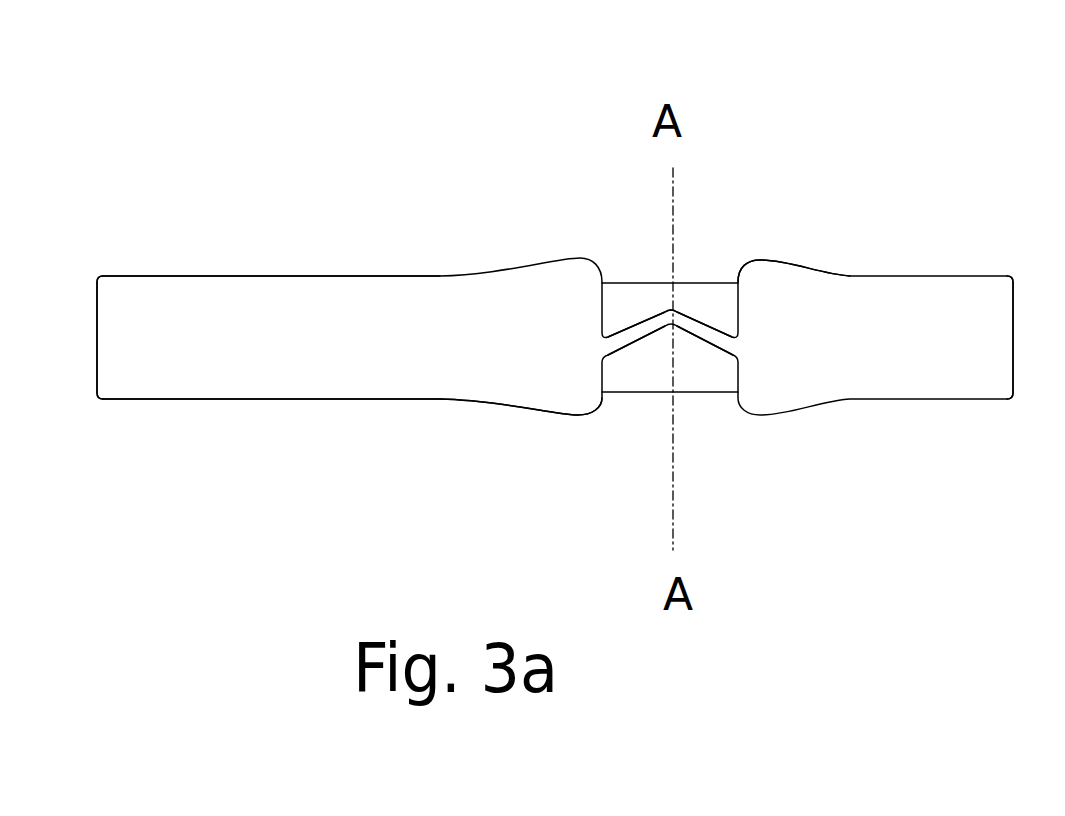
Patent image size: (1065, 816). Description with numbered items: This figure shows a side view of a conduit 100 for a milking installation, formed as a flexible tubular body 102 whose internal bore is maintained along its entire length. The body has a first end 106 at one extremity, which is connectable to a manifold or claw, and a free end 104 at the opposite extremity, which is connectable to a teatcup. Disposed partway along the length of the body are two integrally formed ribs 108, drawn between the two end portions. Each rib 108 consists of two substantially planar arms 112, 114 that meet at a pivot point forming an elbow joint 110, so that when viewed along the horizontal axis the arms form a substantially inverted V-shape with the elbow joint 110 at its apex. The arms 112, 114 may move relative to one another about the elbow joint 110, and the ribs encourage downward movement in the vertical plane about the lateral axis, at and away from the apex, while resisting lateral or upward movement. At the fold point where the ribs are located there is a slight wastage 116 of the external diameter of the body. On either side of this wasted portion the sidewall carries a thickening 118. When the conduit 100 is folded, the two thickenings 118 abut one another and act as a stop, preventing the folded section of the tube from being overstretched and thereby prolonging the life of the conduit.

The conduit 100 is at (248, 130).
The flexible tubular body 102 is at (190, 402).
The free end 104 is at (97, 297).
The first end 106 is at (1013, 304).
The ribs 108 is at (693, 307).
The elbow joint 110 is at (670, 318).
The arm 112 is at (625, 342).
The arm 114 is at (708, 340).
The wastage 116 is at (679, 392).
The thickening 118 is at (753, 261).